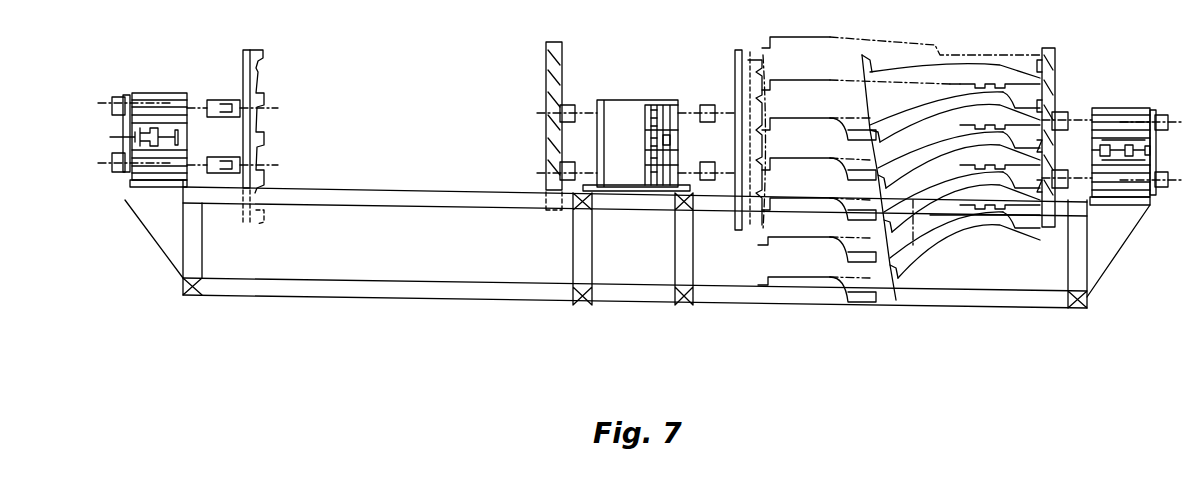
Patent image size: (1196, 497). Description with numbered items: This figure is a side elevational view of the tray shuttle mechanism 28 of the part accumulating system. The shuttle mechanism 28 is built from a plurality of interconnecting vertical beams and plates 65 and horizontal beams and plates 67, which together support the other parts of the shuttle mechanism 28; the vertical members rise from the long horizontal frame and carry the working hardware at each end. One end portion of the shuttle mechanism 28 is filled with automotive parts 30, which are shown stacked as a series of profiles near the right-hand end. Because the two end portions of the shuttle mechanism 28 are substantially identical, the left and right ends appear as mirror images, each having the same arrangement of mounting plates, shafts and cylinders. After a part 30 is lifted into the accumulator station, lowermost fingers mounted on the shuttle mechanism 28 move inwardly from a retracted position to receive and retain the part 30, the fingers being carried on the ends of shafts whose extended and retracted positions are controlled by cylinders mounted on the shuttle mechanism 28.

The tray shuttle mechanism 28 is at (937, 169).
The automotive parts 30 is at (928, 215).
The vertical beams and plates 65 is at (202, 258).
The horizontal beams and plates 67 is at (398, 298).